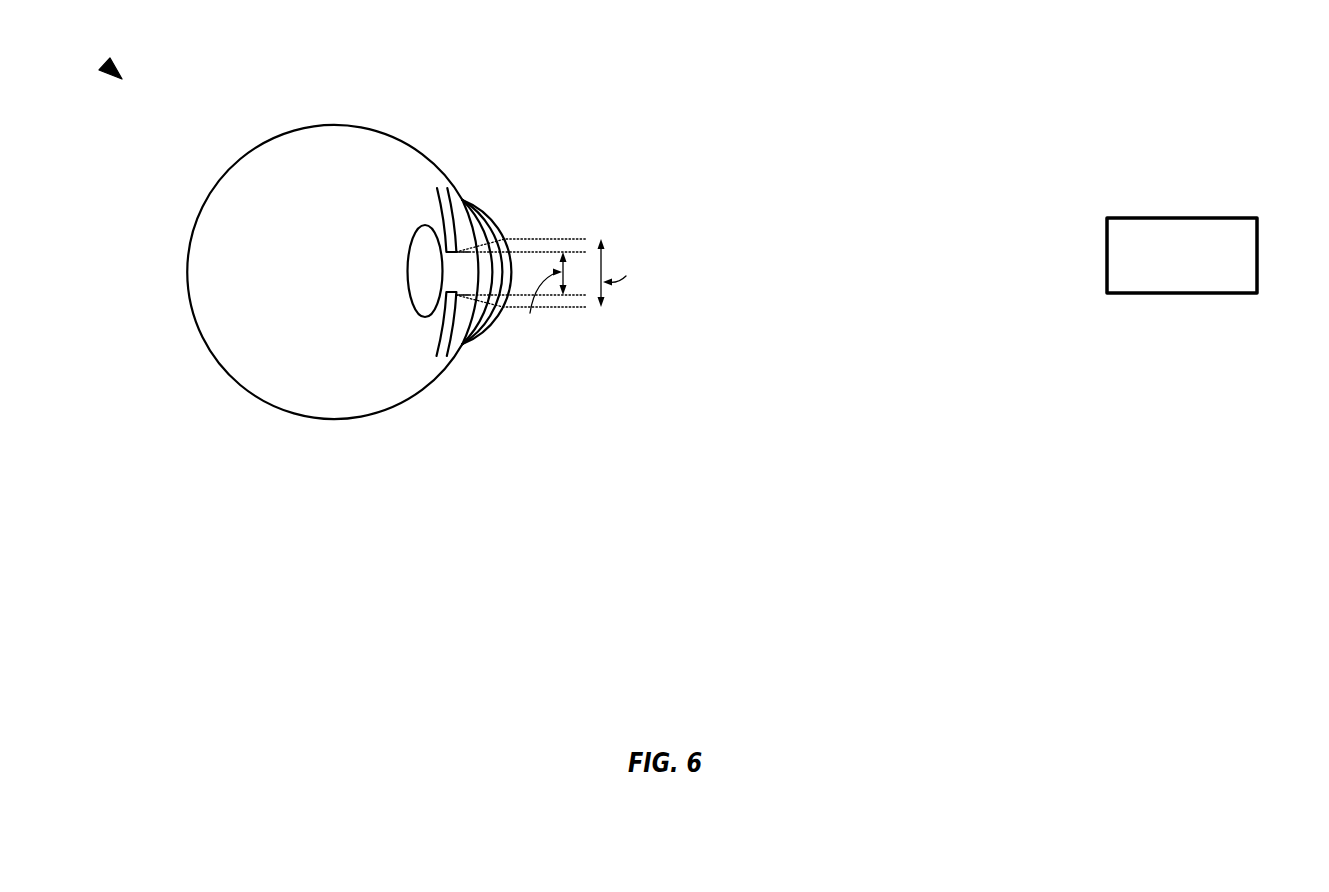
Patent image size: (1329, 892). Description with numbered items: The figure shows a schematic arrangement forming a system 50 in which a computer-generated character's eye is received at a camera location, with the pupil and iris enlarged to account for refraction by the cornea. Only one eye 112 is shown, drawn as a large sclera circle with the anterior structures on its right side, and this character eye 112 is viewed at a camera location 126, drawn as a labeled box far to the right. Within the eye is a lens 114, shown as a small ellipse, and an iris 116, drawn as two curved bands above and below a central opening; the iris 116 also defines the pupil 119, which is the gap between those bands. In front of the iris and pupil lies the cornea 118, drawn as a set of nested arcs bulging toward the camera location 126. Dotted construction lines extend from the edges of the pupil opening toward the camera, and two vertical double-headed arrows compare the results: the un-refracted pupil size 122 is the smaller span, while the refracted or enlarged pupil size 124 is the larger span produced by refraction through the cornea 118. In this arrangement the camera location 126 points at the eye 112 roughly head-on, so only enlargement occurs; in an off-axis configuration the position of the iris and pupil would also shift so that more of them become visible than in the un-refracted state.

The system 50 is at (104, 64).
The eye 112 is at (343, 124).
The lens 114 is at (336, 280).
The iris 116 is at (384, 208).
The cornea 118 is at (468, 193).
The pupil 119 is at (453, 268).
The un-refracted pupil size 122 is at (582, 342).
The refracted pupil size 124 is at (682, 213).
The camera location 126 is at (1240, 218).